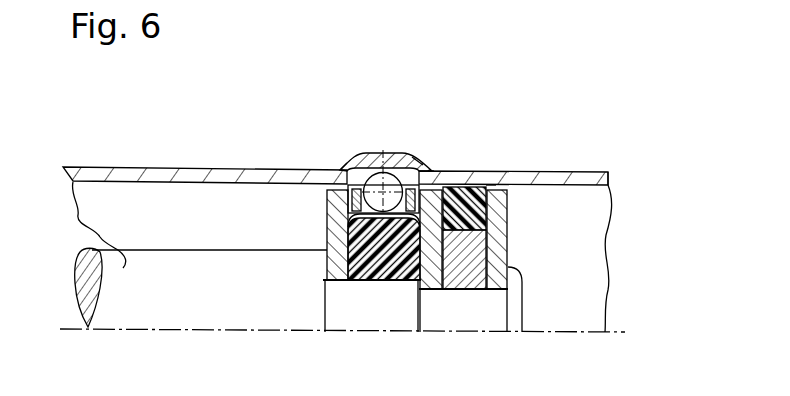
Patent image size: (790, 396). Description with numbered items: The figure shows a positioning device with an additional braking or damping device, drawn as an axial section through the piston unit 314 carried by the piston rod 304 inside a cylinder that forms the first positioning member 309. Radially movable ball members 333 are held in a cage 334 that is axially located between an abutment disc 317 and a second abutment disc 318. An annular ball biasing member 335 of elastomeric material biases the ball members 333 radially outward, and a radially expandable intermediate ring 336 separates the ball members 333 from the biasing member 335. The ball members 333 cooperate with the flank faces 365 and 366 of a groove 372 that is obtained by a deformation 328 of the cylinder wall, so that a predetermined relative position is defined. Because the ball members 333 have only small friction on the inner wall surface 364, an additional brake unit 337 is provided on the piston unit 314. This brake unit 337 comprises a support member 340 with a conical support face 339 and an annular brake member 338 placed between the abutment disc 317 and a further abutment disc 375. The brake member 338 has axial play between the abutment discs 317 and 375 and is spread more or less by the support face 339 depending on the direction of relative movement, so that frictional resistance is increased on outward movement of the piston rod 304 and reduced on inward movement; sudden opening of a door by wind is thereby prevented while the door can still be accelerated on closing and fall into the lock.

The piston rod 304 is at (104, 236).
The first positioning member 309 is at (150, 168).
The piston unit 314 is at (509, 233).
The abutment disc 317 is at (428, 282).
The abutment disc 318 is at (327, 265).
The deformation 328 is at (377, 152).
The ball members 333 is at (388, 152).
The cage 334 is at (437, 172).
The ball biasing member 335 is at (392, 248).
The intermediate ring 336 is at (349, 217).
The brake unit 337 is at (492, 182).
The brake member 338 is at (503, 244).
The support face 339 is at (463, 310).
The support member 340 is at (455, 290).
The inner wall surface 364 is at (608, 185).
The flank face 365 is at (346, 166).
The flank face 366 is at (413, 163).
The groove 372 is at (381, 152).
The further abutment disc 375 is at (499, 208).